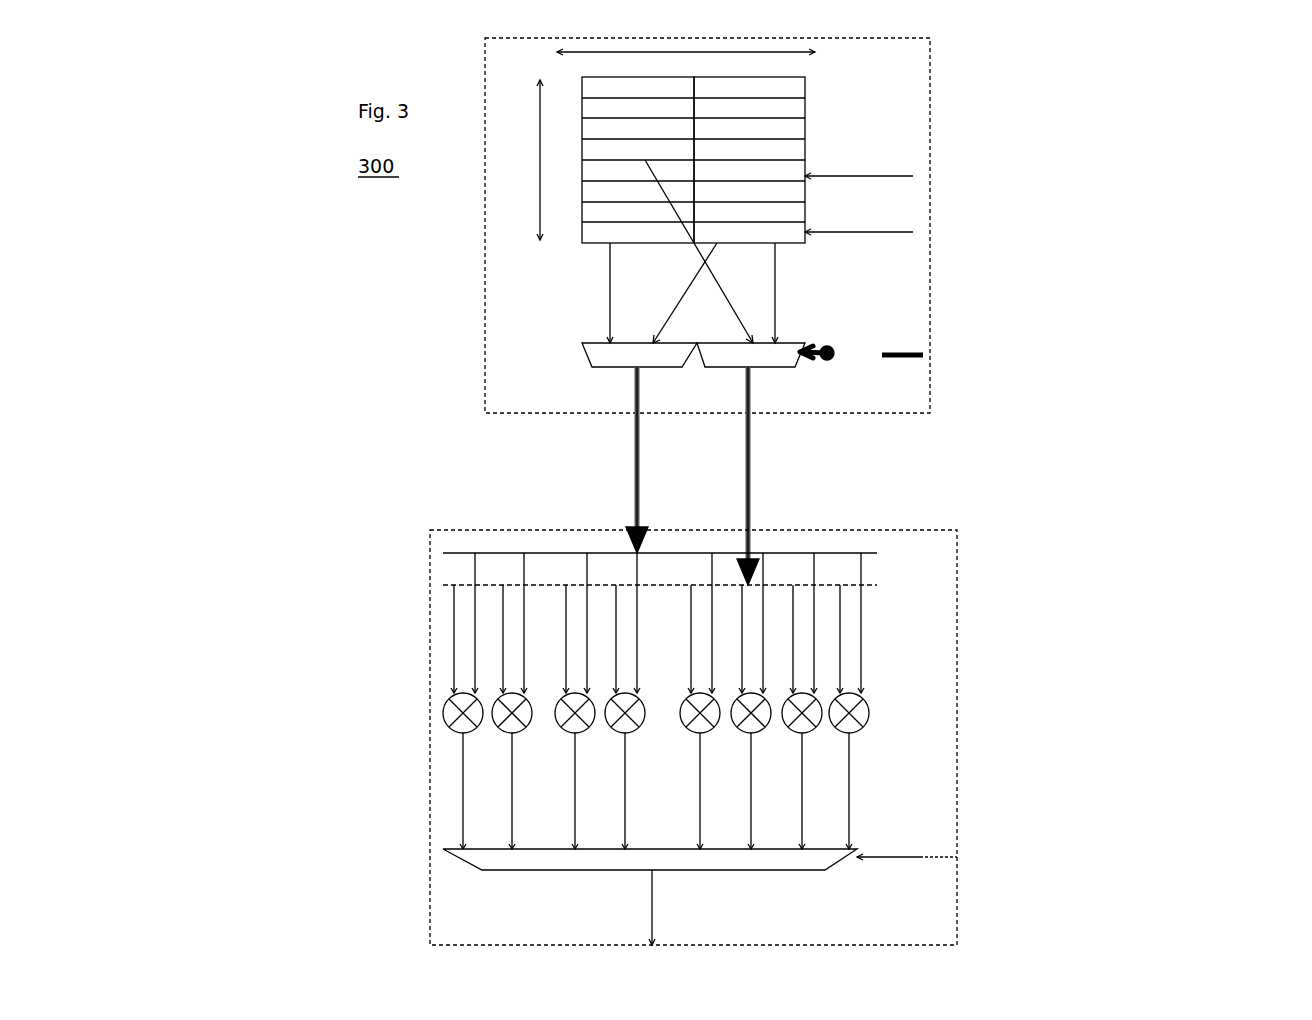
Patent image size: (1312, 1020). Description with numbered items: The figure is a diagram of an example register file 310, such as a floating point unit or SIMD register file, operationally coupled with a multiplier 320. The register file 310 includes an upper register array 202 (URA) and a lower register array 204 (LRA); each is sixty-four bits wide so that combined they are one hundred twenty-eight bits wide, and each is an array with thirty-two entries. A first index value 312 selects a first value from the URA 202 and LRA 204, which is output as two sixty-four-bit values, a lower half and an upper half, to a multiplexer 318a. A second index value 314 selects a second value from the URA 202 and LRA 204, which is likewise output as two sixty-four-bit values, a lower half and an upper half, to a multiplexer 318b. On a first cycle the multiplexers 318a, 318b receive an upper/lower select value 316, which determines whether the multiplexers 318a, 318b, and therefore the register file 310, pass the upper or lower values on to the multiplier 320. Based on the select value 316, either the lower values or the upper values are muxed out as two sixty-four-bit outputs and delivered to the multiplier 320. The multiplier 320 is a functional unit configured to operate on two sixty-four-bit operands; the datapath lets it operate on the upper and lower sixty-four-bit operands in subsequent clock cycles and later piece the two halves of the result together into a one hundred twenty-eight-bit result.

The upper register array 202 is at (580, 147).
The lower register array 204 is at (800, 110).
The register file 310 is at (485, 320).
The first index value 312 is at (928, 233).
The second index value 314 is at (928, 182).
The upper/lower select value 316 is at (924, 358).
The multiplexer 318a is at (578, 356).
The multiplexer 318b is at (798, 368).
The multiplier 320 is at (958, 630).